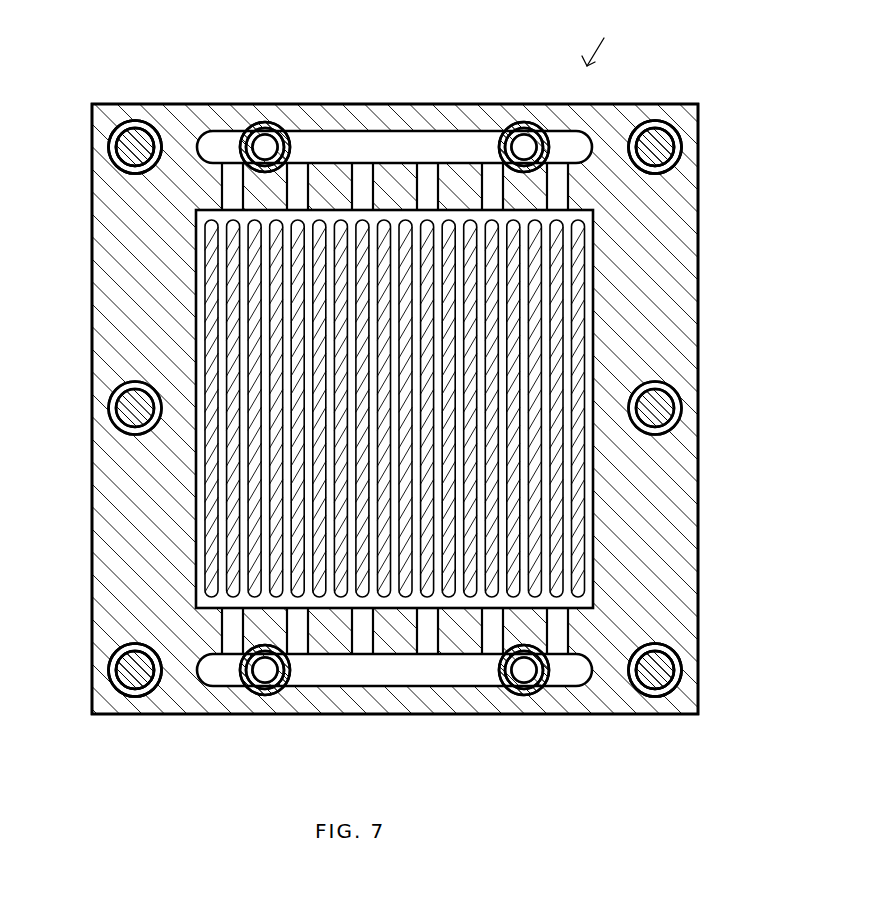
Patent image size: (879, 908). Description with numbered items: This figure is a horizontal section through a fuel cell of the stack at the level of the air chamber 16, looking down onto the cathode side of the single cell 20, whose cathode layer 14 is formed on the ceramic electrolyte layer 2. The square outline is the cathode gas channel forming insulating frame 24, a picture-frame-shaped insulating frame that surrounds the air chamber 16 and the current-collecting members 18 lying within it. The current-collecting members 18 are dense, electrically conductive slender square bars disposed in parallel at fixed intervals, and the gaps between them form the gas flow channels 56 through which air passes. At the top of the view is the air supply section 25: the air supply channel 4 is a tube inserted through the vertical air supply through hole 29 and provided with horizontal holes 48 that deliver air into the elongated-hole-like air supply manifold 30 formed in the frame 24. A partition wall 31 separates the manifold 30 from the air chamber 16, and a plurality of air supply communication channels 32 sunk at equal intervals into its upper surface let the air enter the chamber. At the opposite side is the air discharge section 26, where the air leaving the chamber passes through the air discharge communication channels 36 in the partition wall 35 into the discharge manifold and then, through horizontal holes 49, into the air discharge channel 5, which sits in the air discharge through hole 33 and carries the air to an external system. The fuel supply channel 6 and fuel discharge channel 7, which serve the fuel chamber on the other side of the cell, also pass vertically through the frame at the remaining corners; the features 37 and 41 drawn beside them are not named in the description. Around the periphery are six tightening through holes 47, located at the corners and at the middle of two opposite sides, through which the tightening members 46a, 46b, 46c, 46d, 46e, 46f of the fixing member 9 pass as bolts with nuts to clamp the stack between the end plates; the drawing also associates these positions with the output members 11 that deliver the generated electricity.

The electrolyte layer 2 is at (593, 444).
The cathode layer 14 is at (395, 409).
The air supply channel 4 is at (264, 140).
The air discharge channel 5 is at (532, 688).
The fuel supply channel 6 is at (520, 140).
The fuel discharge channel 7 is at (281, 690).
The fixing member 9 is at (395, 409).
The output members 11 is at (395, 409).
The air chamber 16 is at (594, 245).
The current-collecting members 18 is at (212, 258).
The single cell 20 is at (459, 596).
The cathode gas channel forming insulating frame 24 is at (117, 551).
The air supply section 25 is at (413, 146).
The air discharge section 26 is at (402, 674).
The air supply through hole 29 is at (275, 150).
The air supply manifold 30 is at (391, 150).
The partition wall 31 is at (467, 178).
The air supply communication channels 32 is at (362, 177).
The air discharge through hole 33 is at (522, 690).
The partition wall 35 is at (318, 645).
The air discharge communication channels 36 is at (367, 645).
The outlet hole 37 is at (527, 135).
The inlet hole 41 is at (263, 688).
The tightening member 46a is at (125, 688).
The tightening member 46b is at (652, 690).
The tightening member 46c is at (648, 135).
The tightening member 46d is at (135, 138).
The tightening member 46e is at (658, 397).
The tightening member 46f is at (122, 410).
The tightening through holes 47 is at (109, 157).
The horizontal holes 48 is at (241, 150).
The horizontal holes 49 is at (502, 675).
The gas flow channels 56 is at (247, 340).